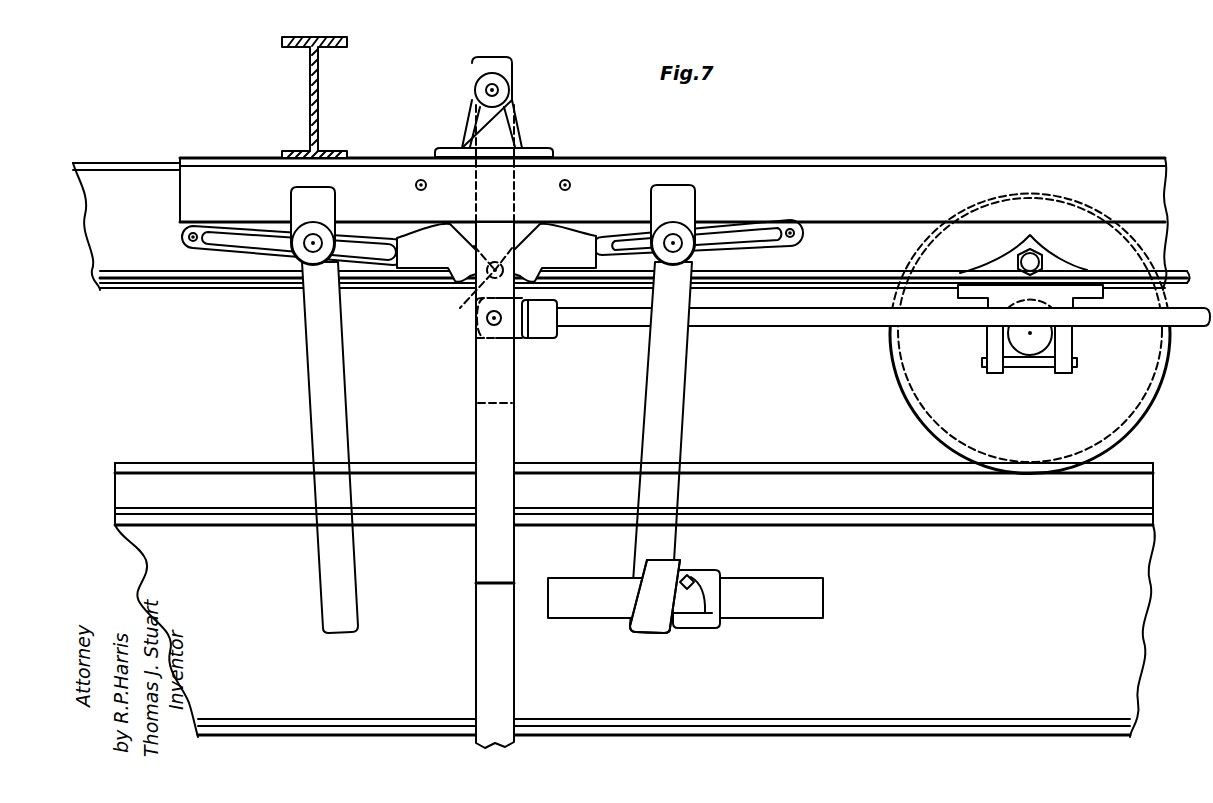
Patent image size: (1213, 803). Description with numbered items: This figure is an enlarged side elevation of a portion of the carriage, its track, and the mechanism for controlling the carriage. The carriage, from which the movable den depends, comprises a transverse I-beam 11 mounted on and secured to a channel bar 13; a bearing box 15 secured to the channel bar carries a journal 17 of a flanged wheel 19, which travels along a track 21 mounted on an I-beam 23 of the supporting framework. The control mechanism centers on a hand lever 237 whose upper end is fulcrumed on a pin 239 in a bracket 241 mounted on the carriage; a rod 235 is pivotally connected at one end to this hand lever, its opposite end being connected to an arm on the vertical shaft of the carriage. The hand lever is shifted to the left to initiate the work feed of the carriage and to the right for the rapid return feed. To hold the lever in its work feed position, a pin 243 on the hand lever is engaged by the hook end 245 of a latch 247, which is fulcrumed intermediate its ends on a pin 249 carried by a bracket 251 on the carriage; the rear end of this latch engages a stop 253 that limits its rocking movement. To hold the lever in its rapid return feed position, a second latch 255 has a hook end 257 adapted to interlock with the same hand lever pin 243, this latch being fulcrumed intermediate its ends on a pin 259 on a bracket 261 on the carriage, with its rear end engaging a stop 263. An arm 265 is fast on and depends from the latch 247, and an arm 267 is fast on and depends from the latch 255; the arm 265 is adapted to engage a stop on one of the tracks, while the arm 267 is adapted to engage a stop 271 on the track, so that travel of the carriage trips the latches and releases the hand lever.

The transverse I-beam 11 is at (318, 88).
The channel bar 13 is at (892, 240).
The bearing box 15 is at (1053, 292).
The journal 17 is at (1037, 337).
The flanged wheel 19 is at (1120, 425).
The track 21 is at (801, 467).
The I-beam 23 is at (1128, 628).
The rod 235 is at (783, 328).
The hand lever 237 is at (516, 652).
The pin 239 is at (495, 91).
The bracket 241 is at (519, 127).
The pin 243 is at (466, 314).
The hook end 245 is at (444, 278).
The latch 247 is at (403, 258).
The pin 249 is at (311, 246).
The bracket 251 is at (289, 200).
The stop 253 is at (216, 224).
The latch 255 is at (574, 258).
The hook end 257 is at (548, 268).
The pin 259 is at (676, 242).
The bracket 261 is at (693, 196).
The stop 263 is at (773, 222).
The arm 265 is at (336, 406).
The arm 267 is at (682, 373).
The stop 271 is at (700, 620).